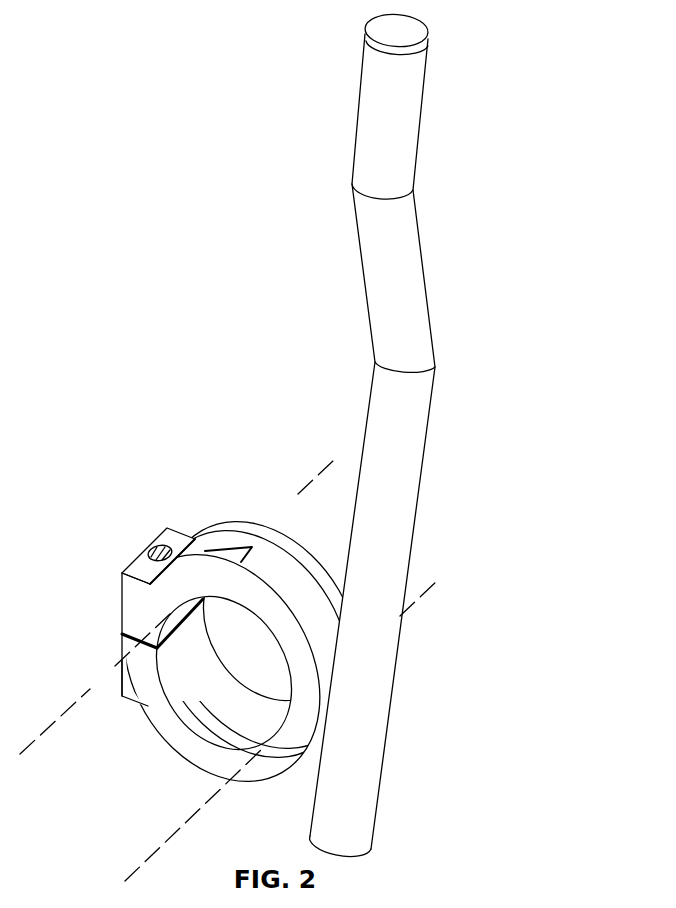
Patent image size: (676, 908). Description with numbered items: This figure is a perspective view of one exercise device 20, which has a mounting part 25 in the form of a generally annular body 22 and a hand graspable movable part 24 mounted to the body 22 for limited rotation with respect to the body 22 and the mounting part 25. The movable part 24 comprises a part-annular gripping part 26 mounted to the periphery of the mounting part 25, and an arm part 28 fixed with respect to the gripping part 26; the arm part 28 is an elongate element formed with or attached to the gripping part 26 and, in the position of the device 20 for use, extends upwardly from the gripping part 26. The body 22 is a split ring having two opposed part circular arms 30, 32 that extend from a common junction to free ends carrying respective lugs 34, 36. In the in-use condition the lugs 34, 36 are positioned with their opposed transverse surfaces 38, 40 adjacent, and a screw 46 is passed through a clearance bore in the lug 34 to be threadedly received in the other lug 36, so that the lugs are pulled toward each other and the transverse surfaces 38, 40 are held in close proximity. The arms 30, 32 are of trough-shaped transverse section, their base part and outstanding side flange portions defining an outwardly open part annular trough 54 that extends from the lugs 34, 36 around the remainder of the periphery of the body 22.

The exercise device 20 is at (277, 446).
The annular body 22 is at (253, 658).
The movable part 24 is at (392, 434).
The mounting part 25 is at (188, 761).
The gripping part 26 is at (322, 619).
The arm part 28 is at (419, 519).
The part circular arm 30 is at (239, 608).
The part circular arm 32 is at (205, 744).
The lug 34 is at (130, 596).
The lug 36 is at (138, 678).
The transverse surface 38 is at (122, 611).
The transverse surface 40 is at (120, 658).
The screw 46 is at (151, 547).
The part annular trough 54 is at (240, 552).